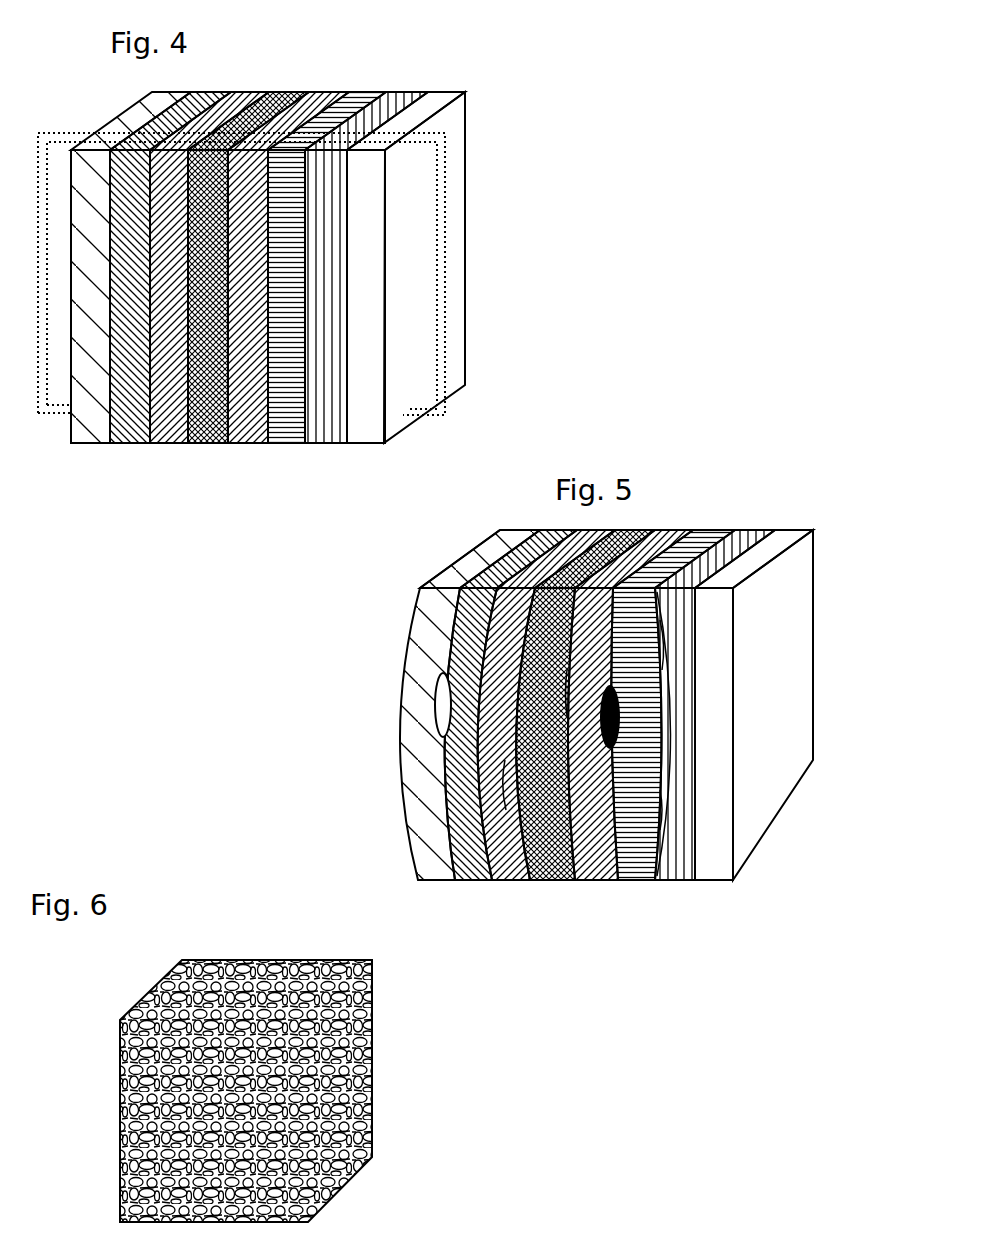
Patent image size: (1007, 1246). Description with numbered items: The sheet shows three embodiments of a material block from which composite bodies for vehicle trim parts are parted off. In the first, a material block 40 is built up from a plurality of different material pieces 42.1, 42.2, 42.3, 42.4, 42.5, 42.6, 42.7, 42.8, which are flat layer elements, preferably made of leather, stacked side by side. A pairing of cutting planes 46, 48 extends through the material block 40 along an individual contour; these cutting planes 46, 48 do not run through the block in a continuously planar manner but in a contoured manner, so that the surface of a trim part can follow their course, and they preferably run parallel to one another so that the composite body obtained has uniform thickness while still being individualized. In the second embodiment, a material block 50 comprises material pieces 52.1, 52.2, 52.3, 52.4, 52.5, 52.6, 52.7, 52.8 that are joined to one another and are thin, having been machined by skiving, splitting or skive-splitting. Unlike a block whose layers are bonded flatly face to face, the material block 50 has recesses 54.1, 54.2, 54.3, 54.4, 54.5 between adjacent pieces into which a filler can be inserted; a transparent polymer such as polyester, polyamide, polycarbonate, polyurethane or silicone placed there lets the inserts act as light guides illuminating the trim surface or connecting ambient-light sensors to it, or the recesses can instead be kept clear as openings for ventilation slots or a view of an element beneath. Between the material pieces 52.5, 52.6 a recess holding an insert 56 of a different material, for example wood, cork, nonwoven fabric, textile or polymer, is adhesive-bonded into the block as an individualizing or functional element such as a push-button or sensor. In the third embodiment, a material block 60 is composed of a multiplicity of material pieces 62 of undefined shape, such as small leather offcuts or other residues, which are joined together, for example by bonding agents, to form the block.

In FIG. 4, the material block 40 is at (392, 60).
In FIG. 4, the material piece 42.1 is at (100, 410).
In FIG. 4, the material piece 42.2 is at (127, 395).
In FIG. 4, the material piece 42.3 is at (172, 427).
In FIG. 4, the material piece 42.4 is at (210, 405).
In FIG. 4, the material piece 42.5 is at (248, 420).
In FIG. 4, the material piece 42.6 is at (297, 415).
In FIG. 4, the material piece 42.7 is at (333, 418).
In FIG. 4, the material piece 42.8 is at (368, 428).
In FIG. 4, the cutting plane 46 is at (445, 152).
In FIG. 4, the cutting plane 48 is at (438, 197).
In FIG. 5, the material block 50 is at (712, 500).
In FIG. 5, the material piece 52.1 is at (443, 858).
In FIG. 5, the material piece 52.2 is at (470, 843).
In FIG. 5, the material piece 52.3 is at (515, 877).
In FIG. 5, the material piece 52.4 is at (555, 853).
In FIG. 5, the material piece 52.5 is at (593, 870).
In FIG. 5, the material piece 52.6 is at (640, 863).
In FIG. 5, the material piece 52.7 is at (678, 867).
In FIG. 5, the material piece 52.8 is at (710, 880).
In FIG. 5, the recess 54.1 is at (440, 706).
In FIG. 5, the recess 54.2 is at (510, 787).
In FIG. 5, the recess 54.3 is at (668, 810).
In FIG. 5, the recess 54.4 is at (668, 642).
In FIG. 5, the recess 54.5 is at (566, 694).
In FIG. 5, the insert 56 is at (483, 542).
In FIG. 6, the material block 60 is at (236, 933).
In FIG. 6, the material piece 62 is at (373, 1090).